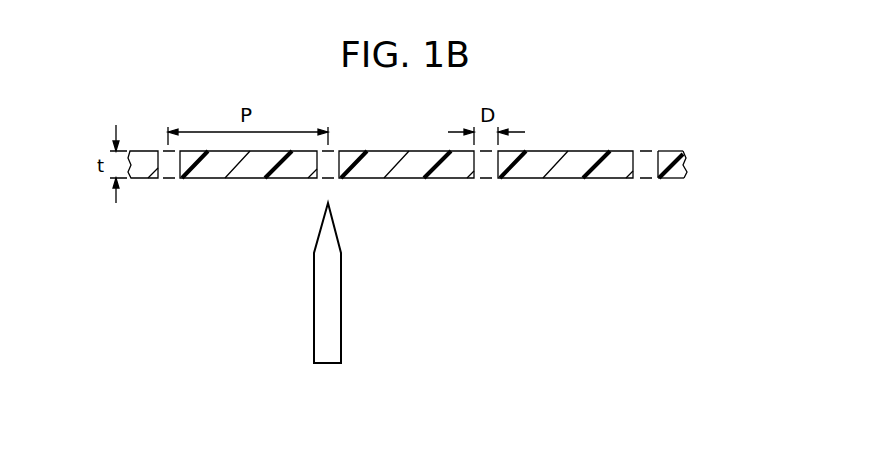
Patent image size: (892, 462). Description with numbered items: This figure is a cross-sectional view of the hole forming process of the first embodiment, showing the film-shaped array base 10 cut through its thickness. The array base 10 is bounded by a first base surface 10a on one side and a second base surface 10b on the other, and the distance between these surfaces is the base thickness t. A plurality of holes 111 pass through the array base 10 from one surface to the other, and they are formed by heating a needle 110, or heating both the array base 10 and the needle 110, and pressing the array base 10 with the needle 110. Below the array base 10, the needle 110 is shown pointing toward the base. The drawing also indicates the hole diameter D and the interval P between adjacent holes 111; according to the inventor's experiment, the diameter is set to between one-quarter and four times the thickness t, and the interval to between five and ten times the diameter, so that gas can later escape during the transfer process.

The array base 10 is at (433, 183).
The first base surface 10a is at (668, 179).
The second base surface 10b is at (670, 152).
The holes 111 is at (655, 168).
The needle 110 is at (336, 303).